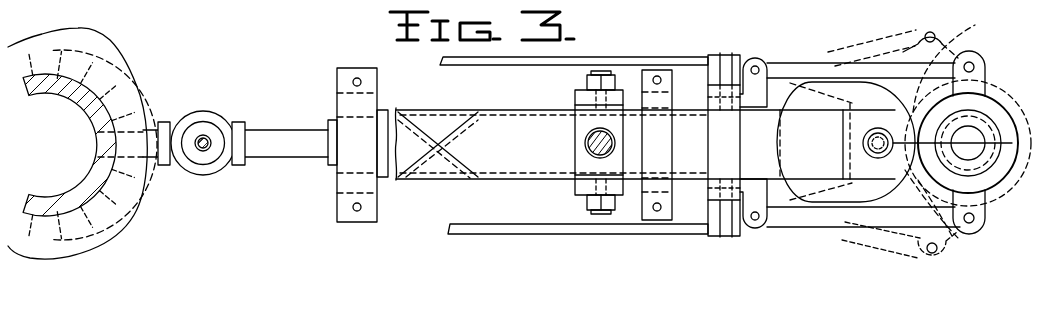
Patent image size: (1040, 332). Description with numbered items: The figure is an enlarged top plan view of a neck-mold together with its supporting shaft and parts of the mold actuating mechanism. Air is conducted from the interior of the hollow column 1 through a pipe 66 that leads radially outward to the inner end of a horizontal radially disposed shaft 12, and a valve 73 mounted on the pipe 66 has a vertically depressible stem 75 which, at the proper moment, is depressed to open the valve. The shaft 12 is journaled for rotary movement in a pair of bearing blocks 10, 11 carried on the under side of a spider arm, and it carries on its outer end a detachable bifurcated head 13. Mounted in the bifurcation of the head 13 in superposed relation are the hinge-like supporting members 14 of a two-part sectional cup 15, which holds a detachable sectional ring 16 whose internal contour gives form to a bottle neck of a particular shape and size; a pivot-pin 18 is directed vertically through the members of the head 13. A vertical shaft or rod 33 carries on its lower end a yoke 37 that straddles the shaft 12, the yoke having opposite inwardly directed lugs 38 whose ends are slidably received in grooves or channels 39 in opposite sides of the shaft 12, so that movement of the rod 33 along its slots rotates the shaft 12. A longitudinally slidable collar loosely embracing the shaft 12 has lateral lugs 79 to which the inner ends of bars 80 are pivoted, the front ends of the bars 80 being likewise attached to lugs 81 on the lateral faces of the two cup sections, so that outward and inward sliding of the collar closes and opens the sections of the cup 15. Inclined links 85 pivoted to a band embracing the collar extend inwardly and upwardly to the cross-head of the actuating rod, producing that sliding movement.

The upright hollow standard or column 1 is at (112, 174).
The bearing block 10 is at (338, 183).
The bearing block 11 is at (663, 100).
The shaft 12 is at (534, 167).
The head 13 is at (825, 170).
The supporting members 14 is at (927, 190).
The two-part sectional cup 15 is at (990, 172).
The sectional ring 16 is at (990, 128).
The pivot-pin 18 is at (863, 143).
The vertical shaft or rod 33 is at (588, 143).
The yoke 37 is at (580, 166).
The lugs 38 is at (590, 101).
The grooves or channels 39 is at (509, 115).
The pipe 66 is at (270, 134).
The valve 73 is at (209, 181).
The stem 75 is at (205, 137).
The lugs 79 is at (763, 67).
The bars 80 is at (801, 66).
The lugs 81 is at (977, 62).
The inclined links 85 is at (606, 62).